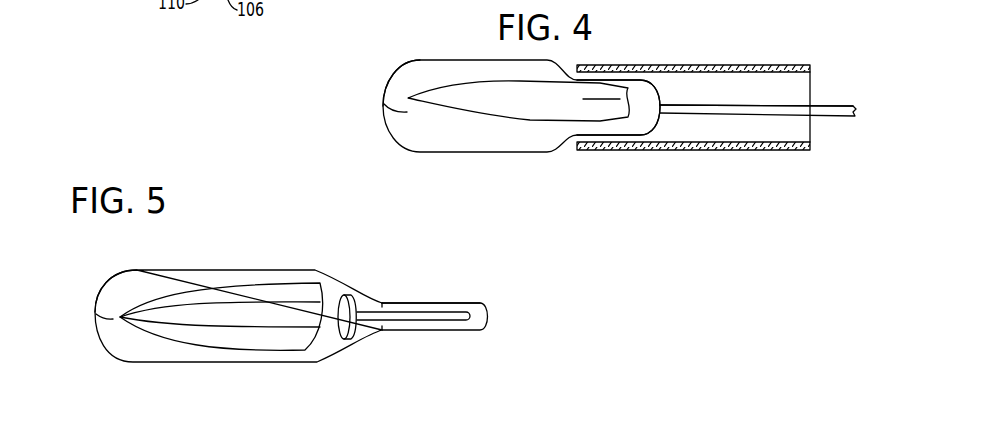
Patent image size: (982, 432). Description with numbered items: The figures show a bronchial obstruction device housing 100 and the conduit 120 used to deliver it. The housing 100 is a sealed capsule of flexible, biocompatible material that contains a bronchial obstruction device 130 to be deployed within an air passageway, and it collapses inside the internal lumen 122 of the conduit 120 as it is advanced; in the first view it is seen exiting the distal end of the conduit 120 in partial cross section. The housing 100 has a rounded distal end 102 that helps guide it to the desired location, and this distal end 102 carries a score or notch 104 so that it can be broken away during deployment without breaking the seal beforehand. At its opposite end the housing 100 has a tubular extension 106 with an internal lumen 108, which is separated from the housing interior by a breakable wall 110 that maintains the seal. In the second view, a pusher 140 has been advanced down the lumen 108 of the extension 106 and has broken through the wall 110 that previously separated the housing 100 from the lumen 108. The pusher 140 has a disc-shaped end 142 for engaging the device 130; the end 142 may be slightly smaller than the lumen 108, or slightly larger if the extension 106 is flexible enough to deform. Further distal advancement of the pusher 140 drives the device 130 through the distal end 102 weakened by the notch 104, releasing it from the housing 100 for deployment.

In FIG. 4, the bronchial obstruction device housing 100 is at (450, 59).
In FIG. 5, the bronchial obstruction device housing 100 is at (238, 269).
In FIG. 4, the rounded distal end 102 is at (390, 80).
In FIG. 5, the rounded distal end 102 is at (106, 290).
In FIG. 4, the score or notch 104 is at (384, 104).
In FIG. 5, the score or notch 104 is at (97, 317).
In FIG. 4, the tubular extension 106 is at (757, 118).
In FIG. 5, the tubular extension 106 is at (433, 303).
In FIG. 4, the internal lumen 108 is at (820, 105).
In FIG. 5, the internal lumen 108 is at (433, 328).
In FIG. 4, the breakable wall 110 is at (662, 107).
In FIG. 5, the breakable wall 110 is at (382, 302).
In FIG. 4, the conduit 120 is at (688, 67).
In FIG. 4, the internal lumen 122 is at (742, 83).
In FIG. 4, the bronchial obstruction device 130 is at (512, 122).
In FIG. 5, the bronchial obstruction device 130 is at (177, 295).
In FIG. 5, the pusher 140 is at (402, 314).
In FIG. 5, the disc-shaped end 142 is at (335, 298).